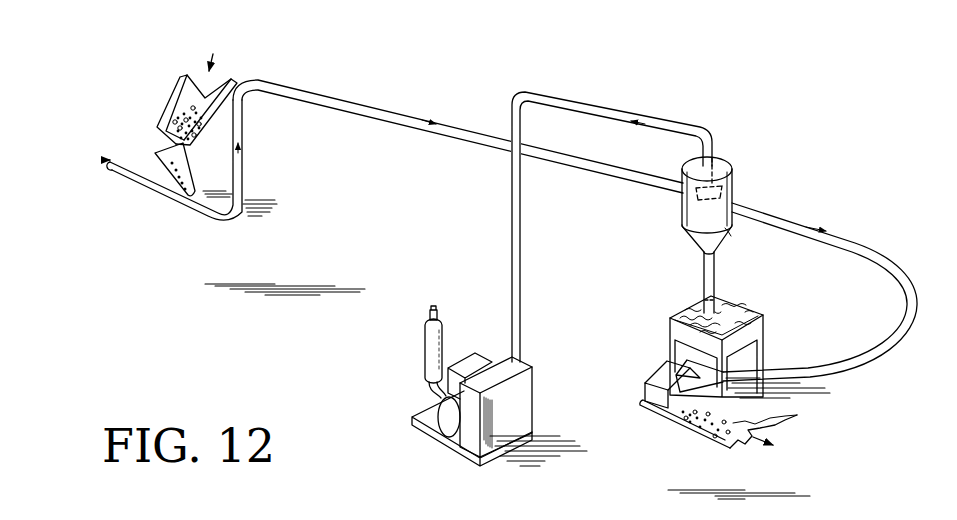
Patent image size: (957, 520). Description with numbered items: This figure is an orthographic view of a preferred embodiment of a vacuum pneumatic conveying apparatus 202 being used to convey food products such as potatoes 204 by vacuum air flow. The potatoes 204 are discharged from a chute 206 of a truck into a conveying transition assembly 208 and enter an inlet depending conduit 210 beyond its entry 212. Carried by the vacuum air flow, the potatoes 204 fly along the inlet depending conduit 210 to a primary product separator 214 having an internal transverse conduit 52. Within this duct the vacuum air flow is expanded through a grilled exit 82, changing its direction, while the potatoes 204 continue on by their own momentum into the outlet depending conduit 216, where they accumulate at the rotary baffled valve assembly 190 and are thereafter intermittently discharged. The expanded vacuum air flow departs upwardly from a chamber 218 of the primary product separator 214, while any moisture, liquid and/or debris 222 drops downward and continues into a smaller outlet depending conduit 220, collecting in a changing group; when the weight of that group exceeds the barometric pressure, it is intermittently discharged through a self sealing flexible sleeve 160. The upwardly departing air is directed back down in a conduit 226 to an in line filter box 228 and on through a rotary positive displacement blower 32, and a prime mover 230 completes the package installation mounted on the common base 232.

The chute 206 is at (177, 82).
The conveying transition assembly 208 is at (149, 147).
The entry 212 is at (100, 161).
The inlet depending conduit 210 is at (323, 92).
The conduit 226 is at (589, 101).
The primary product separator 214 is at (733, 160).
The grilled exit 82 is at (712, 192).
The chamber 218 is at (683, 193).
The vacuum pneumatic conveying apparatus 202 is at (681, 227).
The internal transverse conduit 52 is at (729, 226).
The outlet depending conduit 216 is at (793, 217).
The smaller outlet depending conduit 220 is at (703, 275).
The debris 222 is at (712, 293).
The self sealing flexible sleeve 160 is at (700, 305).
The rotary baffled valve assembly 190 is at (662, 375).
The potatoes 204 is at (733, 425).
The prime mover 230 is at (466, 356).
The common base 232 is at (426, 412).
The in line filter box 228 is at (531, 398).
The rotary positive displacement blower 32 is at (445, 433).